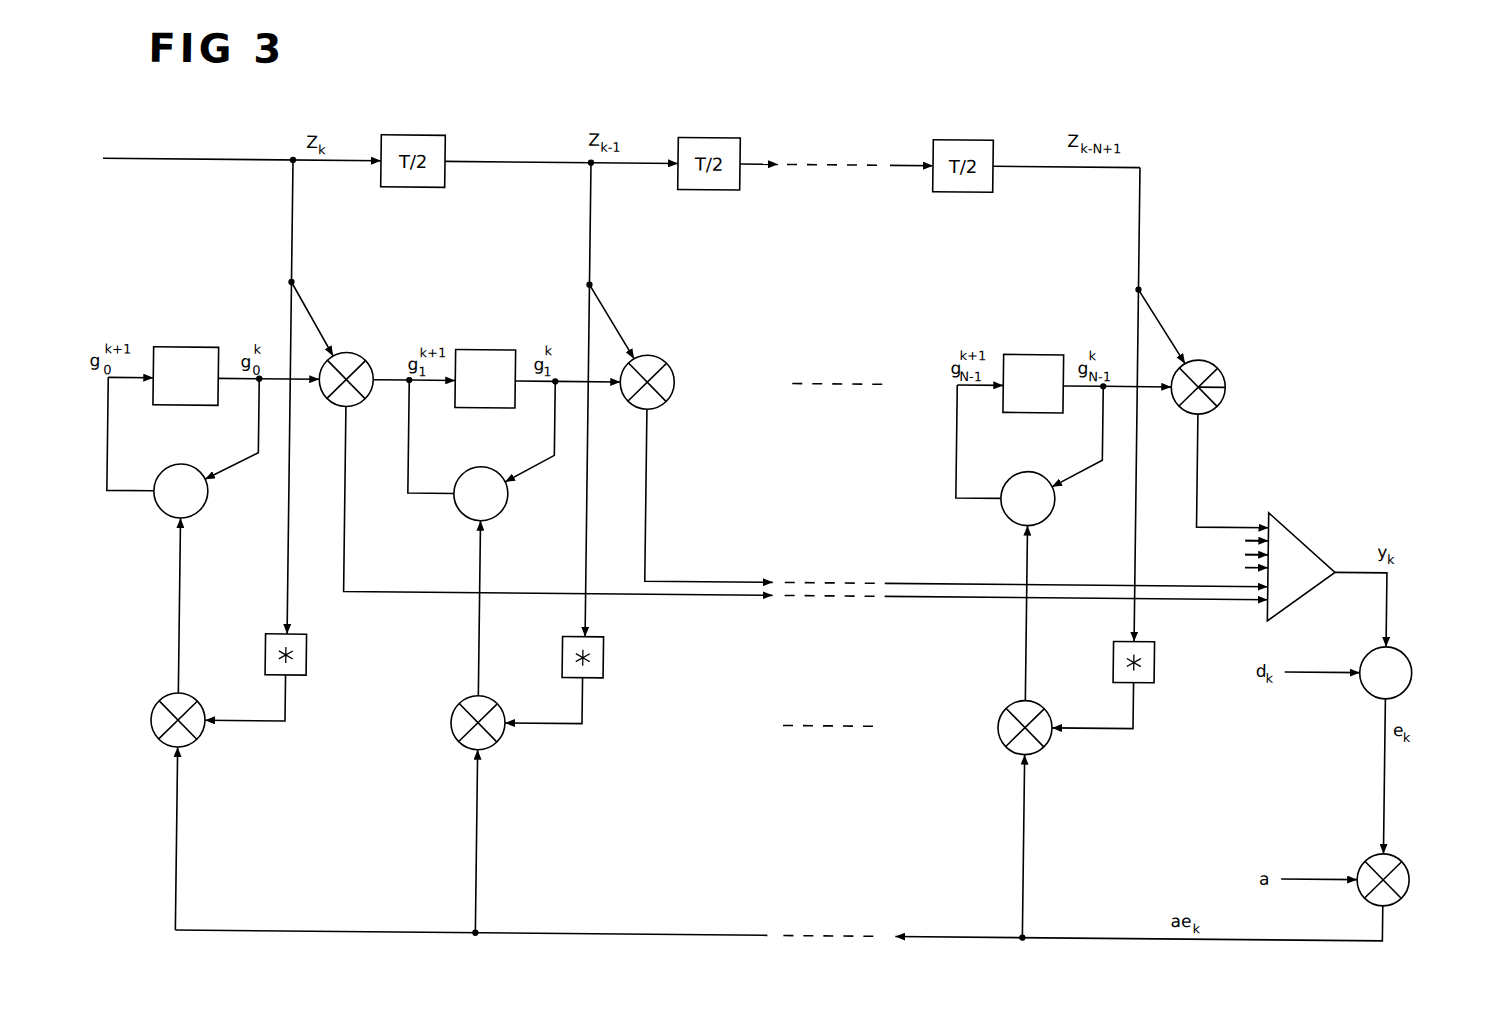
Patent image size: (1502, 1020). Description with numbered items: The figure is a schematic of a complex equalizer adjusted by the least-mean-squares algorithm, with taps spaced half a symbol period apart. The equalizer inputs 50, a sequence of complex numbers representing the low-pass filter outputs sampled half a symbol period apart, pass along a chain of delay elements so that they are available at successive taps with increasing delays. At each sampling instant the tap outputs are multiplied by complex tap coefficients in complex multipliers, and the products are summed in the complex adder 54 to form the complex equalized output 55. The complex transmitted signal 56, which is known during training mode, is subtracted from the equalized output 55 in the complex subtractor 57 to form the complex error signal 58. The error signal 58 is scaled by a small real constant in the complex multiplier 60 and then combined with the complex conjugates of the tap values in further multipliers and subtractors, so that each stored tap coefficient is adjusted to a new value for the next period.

The equalizer inputs 50 is at (205, 157).
The complex adder 54 is at (1302, 526).
The complex equalized output 55 is at (1392, 588).
The complex transmitted signal 56 is at (1319, 666).
The complex subtractor 57 is at (1417, 677).
The complex error signal 58 is at (1391, 713).
The complex multiplier 60 is at (1419, 857).